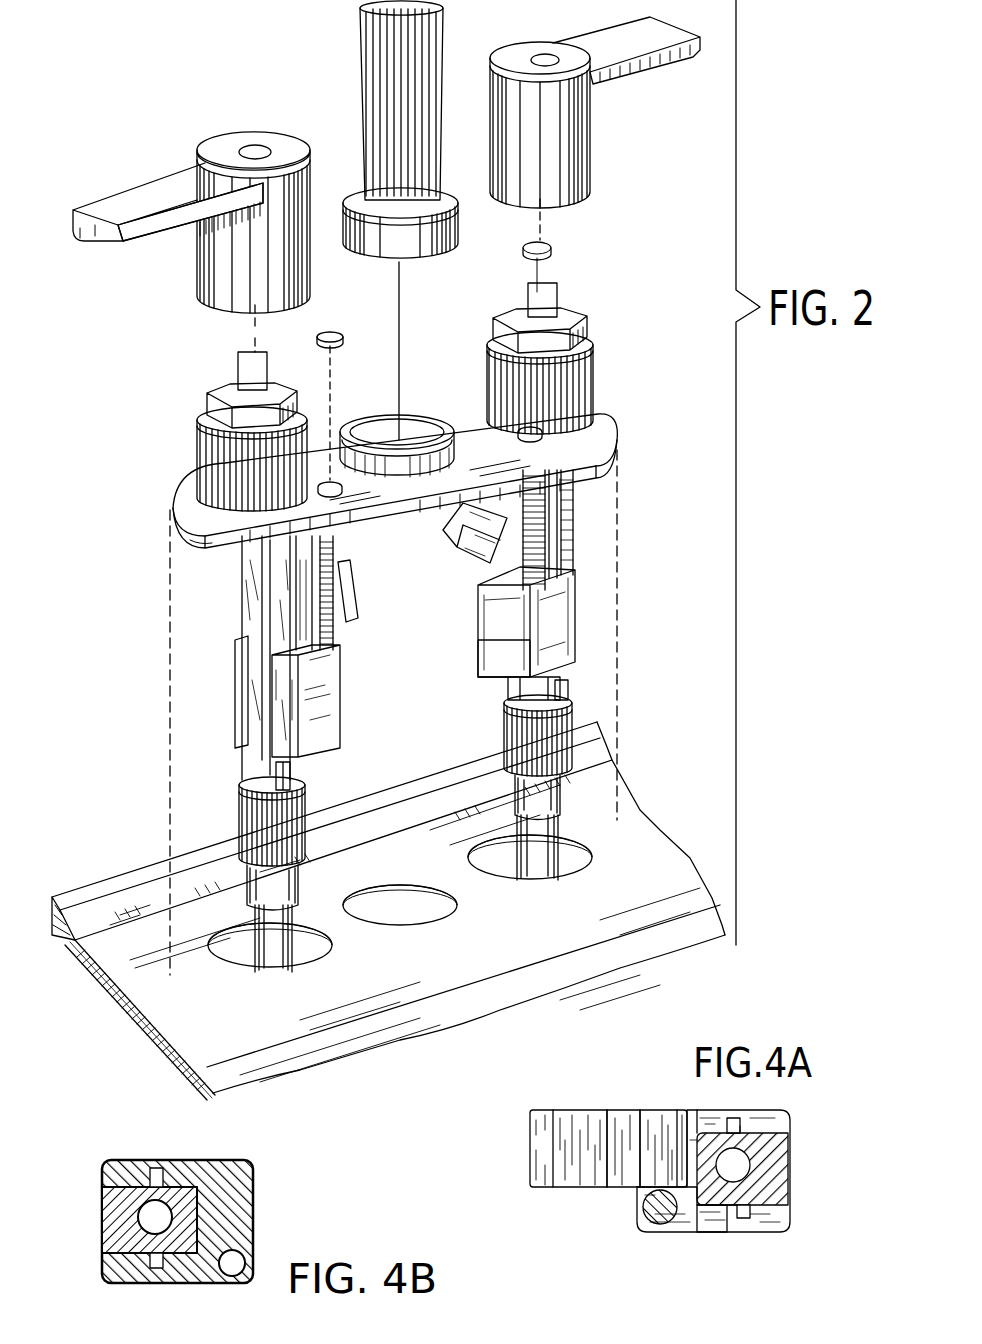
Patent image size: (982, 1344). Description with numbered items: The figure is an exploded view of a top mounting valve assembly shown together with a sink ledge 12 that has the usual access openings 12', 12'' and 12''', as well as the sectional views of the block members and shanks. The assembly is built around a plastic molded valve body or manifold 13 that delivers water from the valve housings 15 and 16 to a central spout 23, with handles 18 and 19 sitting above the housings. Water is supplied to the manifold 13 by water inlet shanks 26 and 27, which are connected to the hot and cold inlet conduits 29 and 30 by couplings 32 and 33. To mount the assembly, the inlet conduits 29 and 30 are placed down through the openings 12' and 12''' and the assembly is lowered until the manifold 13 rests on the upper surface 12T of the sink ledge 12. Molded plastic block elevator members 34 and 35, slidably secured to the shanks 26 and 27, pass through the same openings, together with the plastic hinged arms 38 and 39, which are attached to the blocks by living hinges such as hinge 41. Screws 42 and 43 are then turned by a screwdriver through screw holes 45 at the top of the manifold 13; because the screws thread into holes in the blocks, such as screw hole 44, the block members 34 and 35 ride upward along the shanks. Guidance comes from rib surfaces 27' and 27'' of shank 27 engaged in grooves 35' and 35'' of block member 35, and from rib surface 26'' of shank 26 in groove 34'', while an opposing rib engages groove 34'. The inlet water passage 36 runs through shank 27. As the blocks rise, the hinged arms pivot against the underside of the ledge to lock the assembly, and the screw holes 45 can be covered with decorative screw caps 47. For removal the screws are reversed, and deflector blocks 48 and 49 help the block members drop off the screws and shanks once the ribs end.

In FIG. 2, the sink ledge 12 is at (388, 911).
In FIG. 2, the access opening 12' is at (271, 965).
In FIG. 2, the access opening 12'' is at (400, 929).
In FIG. 2, the access opening 12''' is at (533, 867).
In FIG. 2, the upper surface 12T is at (165, 997).
In FIG. 2, the valve body or manifold 13 is at (598, 440).
In FIG. 2, the valve housing 15 is at (197, 460).
In FIG. 2, the right valve cartridge 16 is at (592, 380).
In FIG. 2, the left handle 18 is at (238, 140).
In FIG. 2, the right handle 19 is at (548, 45).
In FIG. 2, the central spout 23 is at (443, 60).
In FIG. 2, the water inlet shank 26 is at (256, 658).
In FIG. 4B, the water inlet shank 26 is at (124, 1220).
In FIG. 2, the rib surface 26'' is at (230, 657).
In FIG. 2, the water inlet shank 27 is at (588, 522).
In FIG. 4A, the water inlet shank 27 is at (778, 1169).
In FIG. 2, the rib surface 27' is at (585, 524).
In FIG. 4A, the rib surface 27' is at (795, 1115).
In FIG. 4A, the rib surface 27'' is at (770, 1241).
In FIG. 2, the hot inlet conduit 29 is at (268, 965).
In FIG. 2, the cold inlet conduit 30 is at (528, 870).
In FIG. 2, the coupling 32 is at (240, 826).
In FIG. 2, the coupling 33 is at (505, 733).
In FIG. 2, the block elevator member 34 is at (327, 701).
In FIG. 4B, the block elevator member 34 is at (165, 1238).
In FIG. 4B, the groove 34' is at (201, 1154).
In FIG. 4B, the groove 34'' is at (175, 1292).
In FIG. 2, the block elevator member 35 is at (492, 670).
In FIG. 4A, the block elevator member 35 is at (748, 1171).
In FIG. 4A, the groove 35' is at (694, 1092).
In FIG. 4A, the groove 35'' is at (698, 1241).
In FIG. 4A, the inlet water passage 36 is at (738, 1165).
In FIG. 4B, the inlet water passage 36 is at (135, 1205).
In FIG. 2, the hinged arm 38 is at (348, 585).
In FIG. 2, the hinged arm 39 is at (457, 548).
In FIG. 4A, the hinged arm 39 is at (572, 1110).
In FIG. 2, the living hinge 41 is at (480, 605).
In FIG. 4A, the living hinge 41 is at (652, 1110).
In FIG. 2, the screw 42 is at (336, 556).
In FIG. 2, the screw 43 is at (546, 498).
In FIG. 4A, the screw 43 is at (648, 1216).
In FIG. 4B, the screw hole 44 is at (232, 1268).
In FIG. 2, the screw hole 45 is at (318, 482).
In FIG. 2, the screw cap 47 is at (530, 256).
In FIG. 2, the deflector block 48 is at (262, 780).
In FIG. 2, the deflector block 49 is at (569, 690).